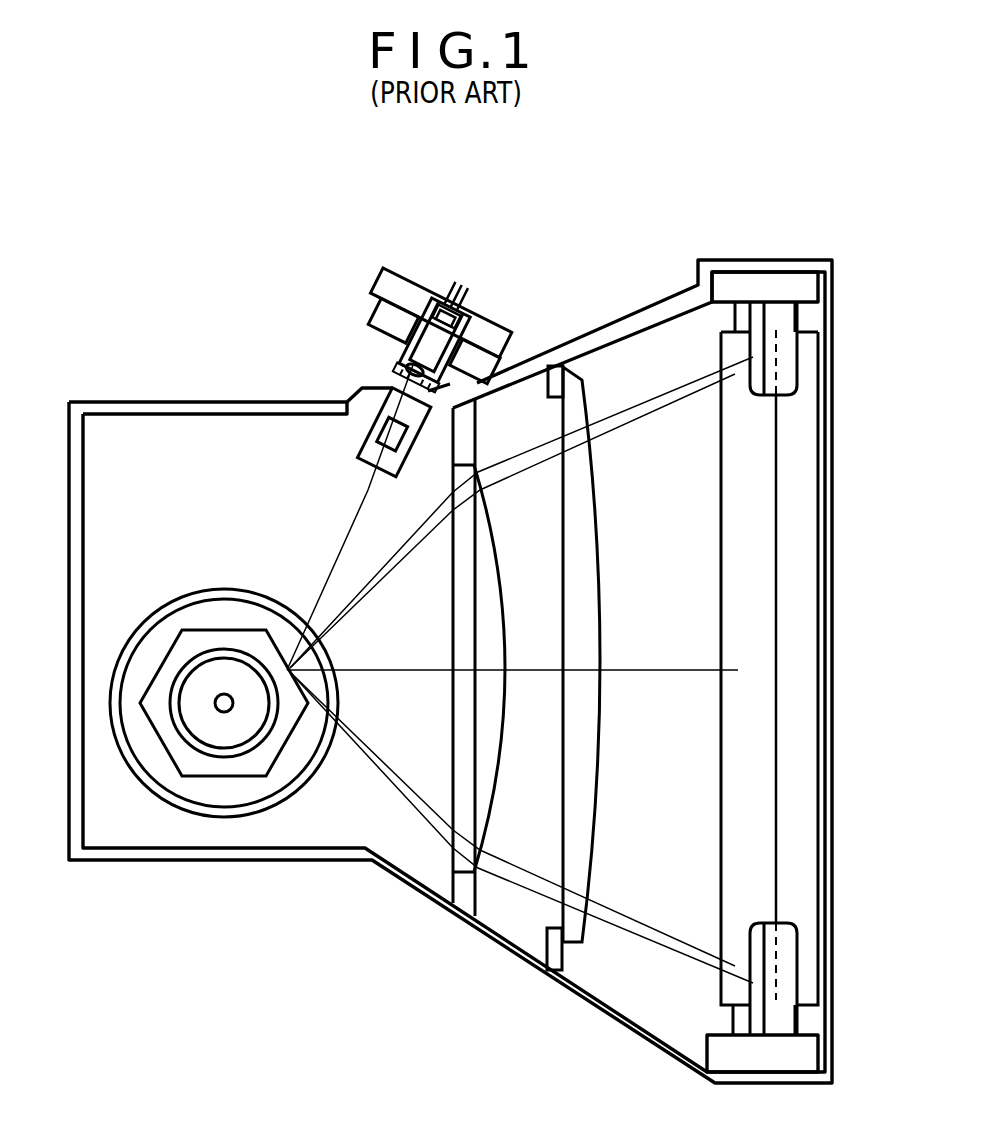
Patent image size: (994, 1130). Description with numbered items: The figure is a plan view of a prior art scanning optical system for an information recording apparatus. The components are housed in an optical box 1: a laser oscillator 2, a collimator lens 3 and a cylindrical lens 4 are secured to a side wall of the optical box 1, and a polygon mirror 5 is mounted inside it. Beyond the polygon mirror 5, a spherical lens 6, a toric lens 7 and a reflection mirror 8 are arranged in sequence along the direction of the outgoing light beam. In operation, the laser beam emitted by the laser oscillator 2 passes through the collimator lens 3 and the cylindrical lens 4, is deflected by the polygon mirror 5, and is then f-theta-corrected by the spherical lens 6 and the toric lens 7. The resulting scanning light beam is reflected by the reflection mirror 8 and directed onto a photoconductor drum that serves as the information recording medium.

The optical box 1 is at (235, 410).
The laser oscillator 2 is at (470, 307).
The collimator lens 3 is at (372, 331).
The cylindrical lens 4 is at (372, 453).
The polygon mirror 5 is at (215, 790).
The spherical lens 6 is at (462, 853).
The toric lens 7 is at (573, 923).
The reflection mirror 8 is at (780, 320).